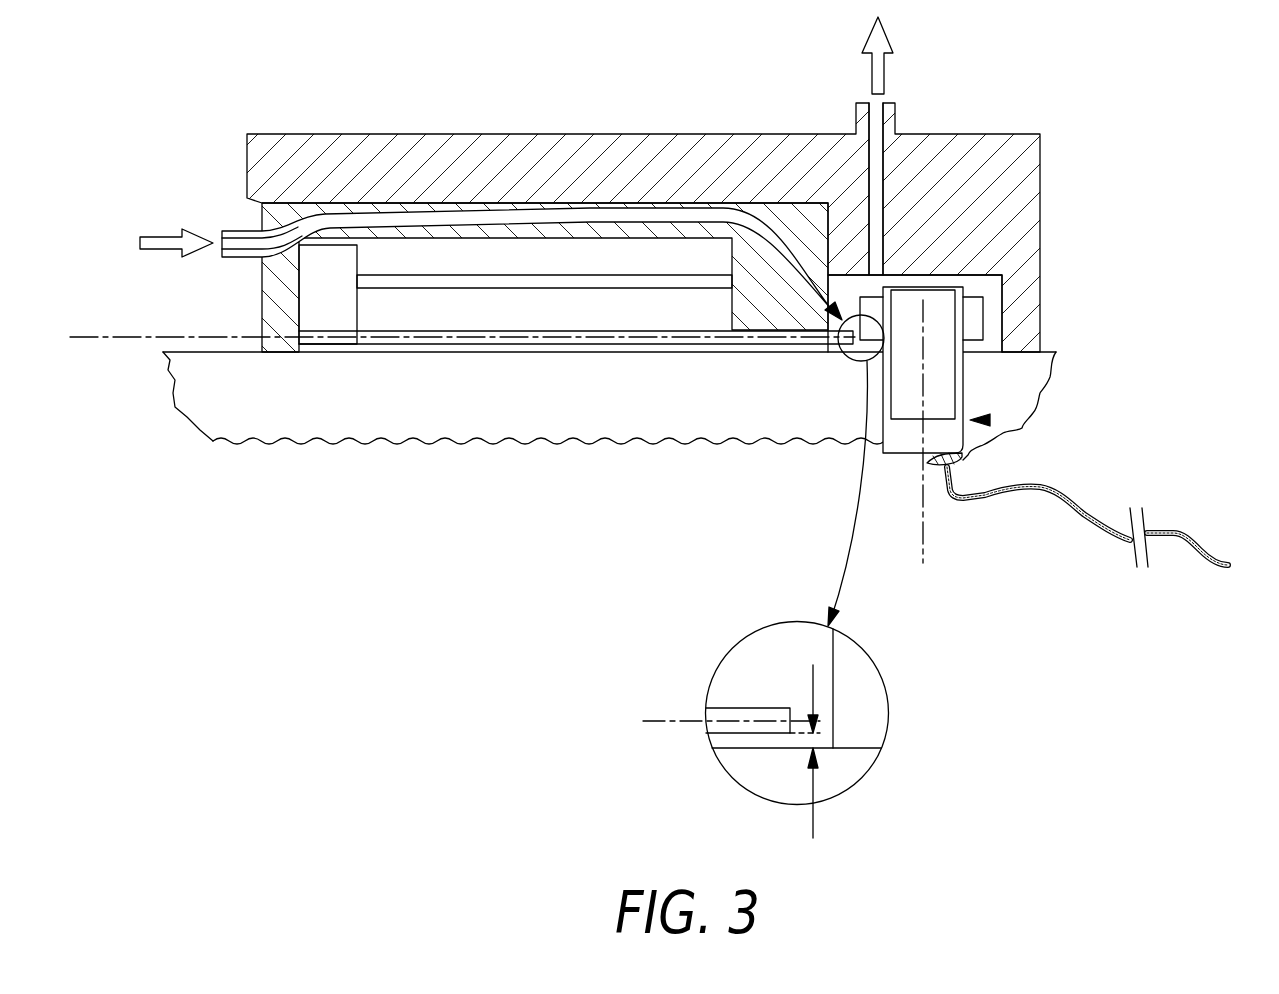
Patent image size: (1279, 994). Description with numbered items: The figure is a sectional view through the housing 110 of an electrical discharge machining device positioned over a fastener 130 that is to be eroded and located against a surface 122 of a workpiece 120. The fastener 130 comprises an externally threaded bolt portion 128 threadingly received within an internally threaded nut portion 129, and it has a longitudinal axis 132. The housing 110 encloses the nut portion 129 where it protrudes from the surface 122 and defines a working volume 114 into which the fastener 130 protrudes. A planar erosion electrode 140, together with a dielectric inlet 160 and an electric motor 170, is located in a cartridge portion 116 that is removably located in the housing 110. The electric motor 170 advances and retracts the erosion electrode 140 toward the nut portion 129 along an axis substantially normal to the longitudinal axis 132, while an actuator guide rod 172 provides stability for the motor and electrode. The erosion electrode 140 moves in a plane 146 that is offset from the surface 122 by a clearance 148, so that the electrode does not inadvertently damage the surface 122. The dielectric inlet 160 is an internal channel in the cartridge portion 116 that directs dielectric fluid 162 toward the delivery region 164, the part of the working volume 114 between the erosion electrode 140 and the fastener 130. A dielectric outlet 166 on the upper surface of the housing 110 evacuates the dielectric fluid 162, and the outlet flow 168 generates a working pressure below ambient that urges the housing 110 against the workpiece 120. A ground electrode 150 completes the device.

The housing 110 is at (1002, 134).
The working volume 114 is at (917, 283).
The cartridge portion 116 is at (262, 285).
The workpiece 120 is at (195, 387).
The surface 122 is at (203, 350).
The bolt portion 128 is at (963, 390).
The nut portion 129 is at (985, 320).
The fastener 130 is at (988, 420).
The longitudinal axis 132 is at (925, 548).
The planar erosion electrode 140 is at (852, 336).
The plane 146 is at (100, 336).
The clearance 148 is at (810, 825).
The ground electrode 150 is at (1187, 533).
The dielectric inlet 160 is at (216, 232).
The dielectric fluid 162 is at (155, 235).
The delivery region 164 is at (800, 713).
The dielectric outlet 166 is at (896, 105).
The outlet flow 168 is at (888, 32).
The electric motor 170 is at (325, 320).
The actuator guide rod 172 is at (453, 273).